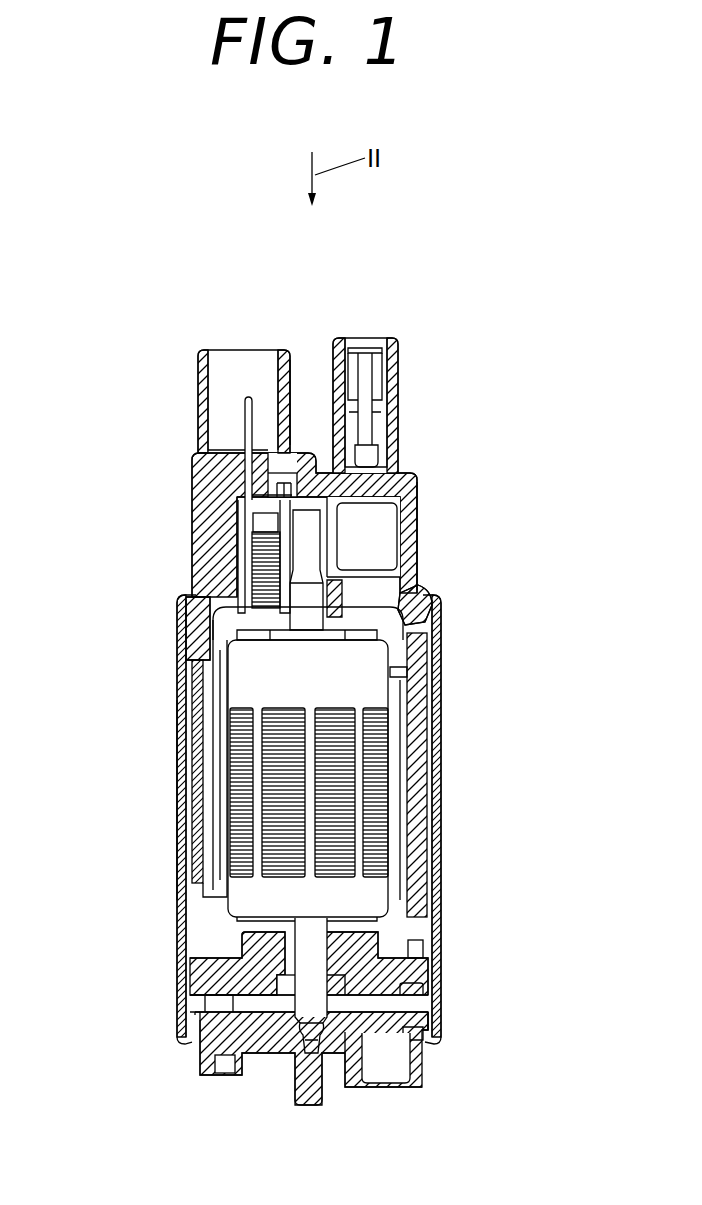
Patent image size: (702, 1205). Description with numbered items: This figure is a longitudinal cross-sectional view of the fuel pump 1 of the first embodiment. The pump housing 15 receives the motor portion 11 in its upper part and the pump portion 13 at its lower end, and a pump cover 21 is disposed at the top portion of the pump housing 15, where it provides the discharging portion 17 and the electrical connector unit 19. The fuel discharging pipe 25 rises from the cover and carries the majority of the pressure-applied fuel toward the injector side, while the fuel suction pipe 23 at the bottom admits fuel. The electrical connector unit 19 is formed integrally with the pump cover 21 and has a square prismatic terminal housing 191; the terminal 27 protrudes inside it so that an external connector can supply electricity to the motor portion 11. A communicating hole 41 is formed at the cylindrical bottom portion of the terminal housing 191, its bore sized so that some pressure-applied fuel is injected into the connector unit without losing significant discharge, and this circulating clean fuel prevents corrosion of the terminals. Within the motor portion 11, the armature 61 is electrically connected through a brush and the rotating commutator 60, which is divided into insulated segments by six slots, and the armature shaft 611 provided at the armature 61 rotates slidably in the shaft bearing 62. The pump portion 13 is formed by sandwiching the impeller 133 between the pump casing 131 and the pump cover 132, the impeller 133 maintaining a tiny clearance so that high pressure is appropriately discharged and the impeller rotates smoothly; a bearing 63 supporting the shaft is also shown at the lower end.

The fuel pump 1 is at (168, 782).
The motor portion 11 is at (450, 733).
The pump portion 13 is at (460, 985).
The pump casing 131 is at (422, 965).
The pump cover 132 is at (430, 1026).
The impeller 133 is at (233, 1003).
The pump housing 15 is at (434, 650).
The discharging portion 17 is at (446, 554).
The electrical connector unit 19 is at (221, 340).
The terminal housing 191 is at (289, 367).
The pump cover 21 is at (418, 507).
The fuel suction pipe 23 is at (375, 1078).
The fuel discharging pipe 25 is at (400, 392).
The terminal 27 is at (253, 405).
The communicating hole 41 is at (293, 407).
The commutator 60 is at (427, 603).
The armature 61 is at (378, 691).
The armature shaft 611 is at (298, 612).
The shaft bearing 62 is at (280, 593).
The bearing 63 is at (285, 953).